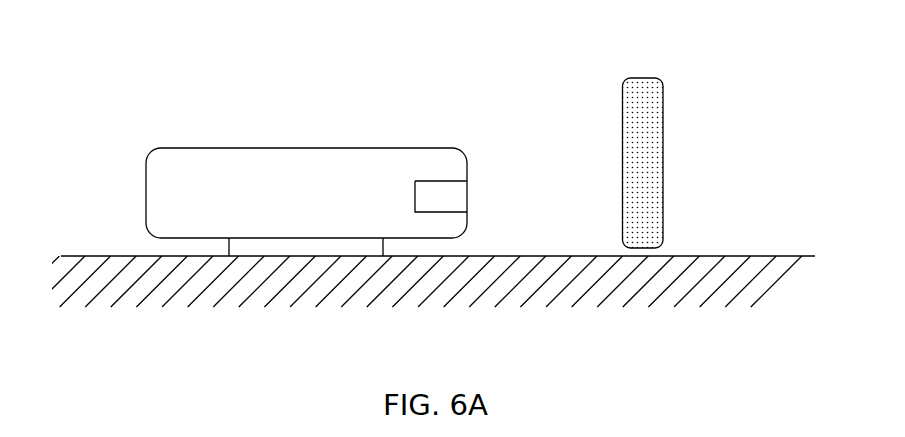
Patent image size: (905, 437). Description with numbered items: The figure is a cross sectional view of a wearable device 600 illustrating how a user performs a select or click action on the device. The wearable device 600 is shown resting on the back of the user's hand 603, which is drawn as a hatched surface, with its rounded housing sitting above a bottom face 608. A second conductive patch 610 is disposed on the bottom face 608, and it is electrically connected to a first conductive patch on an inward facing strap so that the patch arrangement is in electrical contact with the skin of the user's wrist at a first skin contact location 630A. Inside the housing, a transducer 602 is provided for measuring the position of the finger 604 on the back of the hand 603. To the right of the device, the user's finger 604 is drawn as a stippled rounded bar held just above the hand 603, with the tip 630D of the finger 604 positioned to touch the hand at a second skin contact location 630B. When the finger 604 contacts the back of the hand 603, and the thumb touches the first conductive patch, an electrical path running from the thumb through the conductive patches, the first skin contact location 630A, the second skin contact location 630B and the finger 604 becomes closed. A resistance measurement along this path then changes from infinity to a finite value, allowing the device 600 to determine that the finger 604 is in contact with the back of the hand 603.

The wearable device 600 is at (191, 153).
The transducer 602 is at (428, 188).
The hand 603 is at (745, 256).
The finger 604 is at (645, 83).
The bottom face 608 is at (176, 243).
The second conductive patch 610 is at (248, 248).
The first skin contact location 630A is at (330, 257).
The second skin contact location 630B is at (636, 257).
The tip of the finger 630D is at (648, 245).